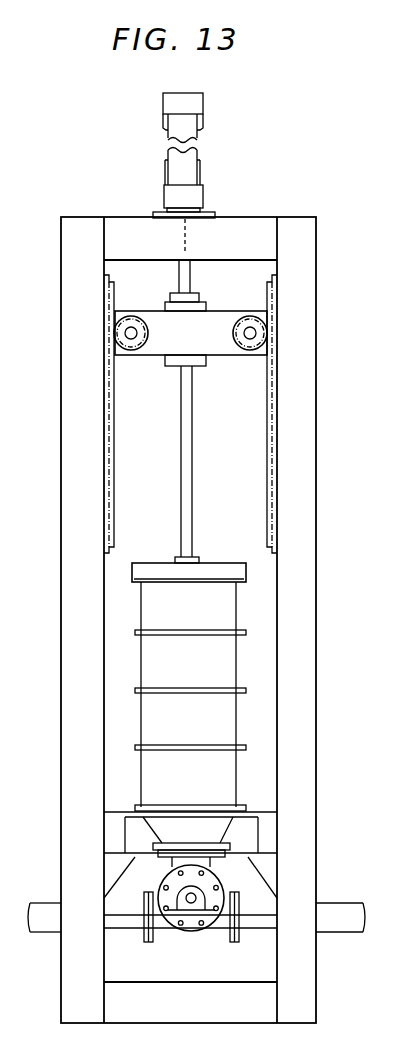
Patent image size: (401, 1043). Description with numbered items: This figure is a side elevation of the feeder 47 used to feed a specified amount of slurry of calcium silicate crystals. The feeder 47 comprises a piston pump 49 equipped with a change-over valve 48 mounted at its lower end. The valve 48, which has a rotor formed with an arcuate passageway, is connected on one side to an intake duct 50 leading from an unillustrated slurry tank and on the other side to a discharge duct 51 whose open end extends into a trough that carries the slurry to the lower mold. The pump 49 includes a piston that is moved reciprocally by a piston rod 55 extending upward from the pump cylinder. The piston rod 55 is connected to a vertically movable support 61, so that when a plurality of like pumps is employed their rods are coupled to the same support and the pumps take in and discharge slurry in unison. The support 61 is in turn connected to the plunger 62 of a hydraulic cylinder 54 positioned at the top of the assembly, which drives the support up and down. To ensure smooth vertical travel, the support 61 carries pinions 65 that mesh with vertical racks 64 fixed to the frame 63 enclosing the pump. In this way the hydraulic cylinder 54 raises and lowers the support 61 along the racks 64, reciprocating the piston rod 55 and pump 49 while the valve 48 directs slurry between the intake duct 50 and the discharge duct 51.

The feeder 47 is at (168, 510).
The change-over valve 48 is at (190, 926).
The piston pump 49 is at (206, 592).
The intake duct 50 is at (40, 934).
The discharge duct 51 is at (342, 934).
The hydraulic cylinder 54 is at (183, 158).
The piston rod 55 is at (193, 442).
The vertically movable support 61 is at (170, 335).
The plunger 62 is at (190, 272).
The frame 63 is at (75, 320).
The vertical racks 64 is at (108, 400).
The pinions 65 is at (135, 325).